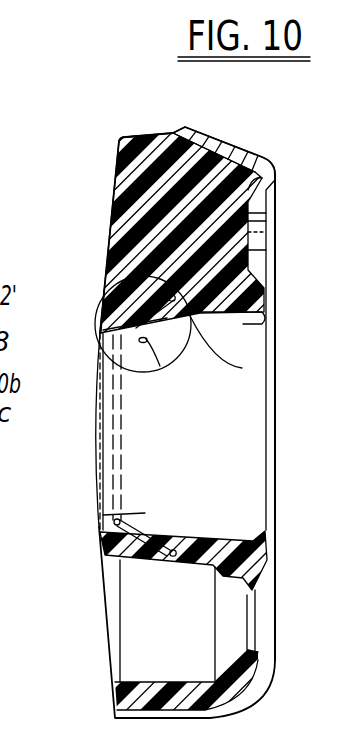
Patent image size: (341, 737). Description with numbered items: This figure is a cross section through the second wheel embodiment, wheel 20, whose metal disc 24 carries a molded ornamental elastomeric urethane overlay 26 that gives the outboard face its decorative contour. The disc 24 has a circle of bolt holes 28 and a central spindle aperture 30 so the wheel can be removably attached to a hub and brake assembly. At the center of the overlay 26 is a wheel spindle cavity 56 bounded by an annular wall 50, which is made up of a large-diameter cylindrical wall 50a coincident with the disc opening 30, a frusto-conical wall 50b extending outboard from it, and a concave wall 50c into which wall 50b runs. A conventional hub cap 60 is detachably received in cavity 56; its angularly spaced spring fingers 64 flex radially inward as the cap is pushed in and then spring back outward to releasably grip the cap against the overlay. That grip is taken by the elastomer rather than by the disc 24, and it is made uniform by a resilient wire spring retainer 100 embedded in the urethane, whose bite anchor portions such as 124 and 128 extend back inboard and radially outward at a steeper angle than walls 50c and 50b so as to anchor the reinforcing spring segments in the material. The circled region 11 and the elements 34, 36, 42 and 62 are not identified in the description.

The wheel 20 is at (158, 126).
The central steel disc 24 is at (242, 141).
The ornamental overlay 26 is at (115, 153).
The bolt holes 28 is at (251, 627).
The central wheel spindle aperture 30 is at (268, 514).
The elastomeric body 34 is at (122, 186).
The side wall 36 is at (103, 268).
The bottom wall 42 is at (140, 682).
The annular wall 50 is at (219, 321).
The large diameter cylindrical wall 50a is at (270, 318).
The frusto-conical wall 50b is at (242, 368).
The concave wall 50c is at (160, 366).
The wheel spindle cavity 56 is at (207, 443).
The hub cap 60 is at (95, 481).
The outer surface 62 is at (96, 392).
The spring fingers 64 is at (119, 519).
The hub cap retention reinforcing retainer 100 is at (181, 570).
The bite anchor portion 124 is at (167, 556).
The bite anchor portion 128 is at (121, 256).
The detail circle 11 is at (97, 318).